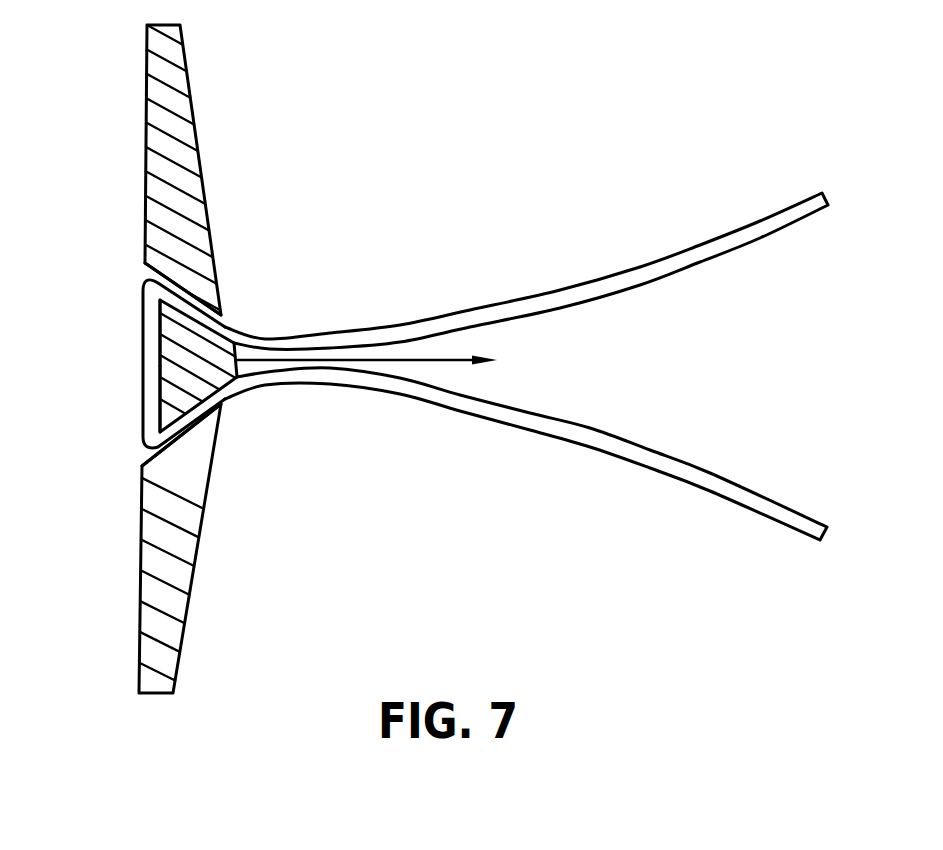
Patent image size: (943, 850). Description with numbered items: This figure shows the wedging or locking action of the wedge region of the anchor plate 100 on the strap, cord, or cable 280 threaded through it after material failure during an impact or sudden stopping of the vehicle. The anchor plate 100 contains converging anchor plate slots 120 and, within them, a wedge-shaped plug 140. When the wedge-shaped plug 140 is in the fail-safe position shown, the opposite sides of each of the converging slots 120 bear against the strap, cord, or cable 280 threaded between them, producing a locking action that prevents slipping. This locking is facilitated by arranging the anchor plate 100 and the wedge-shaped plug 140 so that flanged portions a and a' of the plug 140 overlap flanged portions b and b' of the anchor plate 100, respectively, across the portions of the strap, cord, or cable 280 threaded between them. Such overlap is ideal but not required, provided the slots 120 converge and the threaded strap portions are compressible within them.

The anchor plate 100 is at (224, 84).
The converging anchor plate slots 120 is at (130, 270).
The wedge-shaped plug 140 is at (237, 327).
The strap, cord, or cable 280 is at (737, 245).
The flanged portion of plug a is at (112, 406).
The flanged portion of plug a' is at (108, 320).
The flanged portion of anchor plate b is at (207, 440).
The flanged portion of anchor plate b' is at (219, 277).